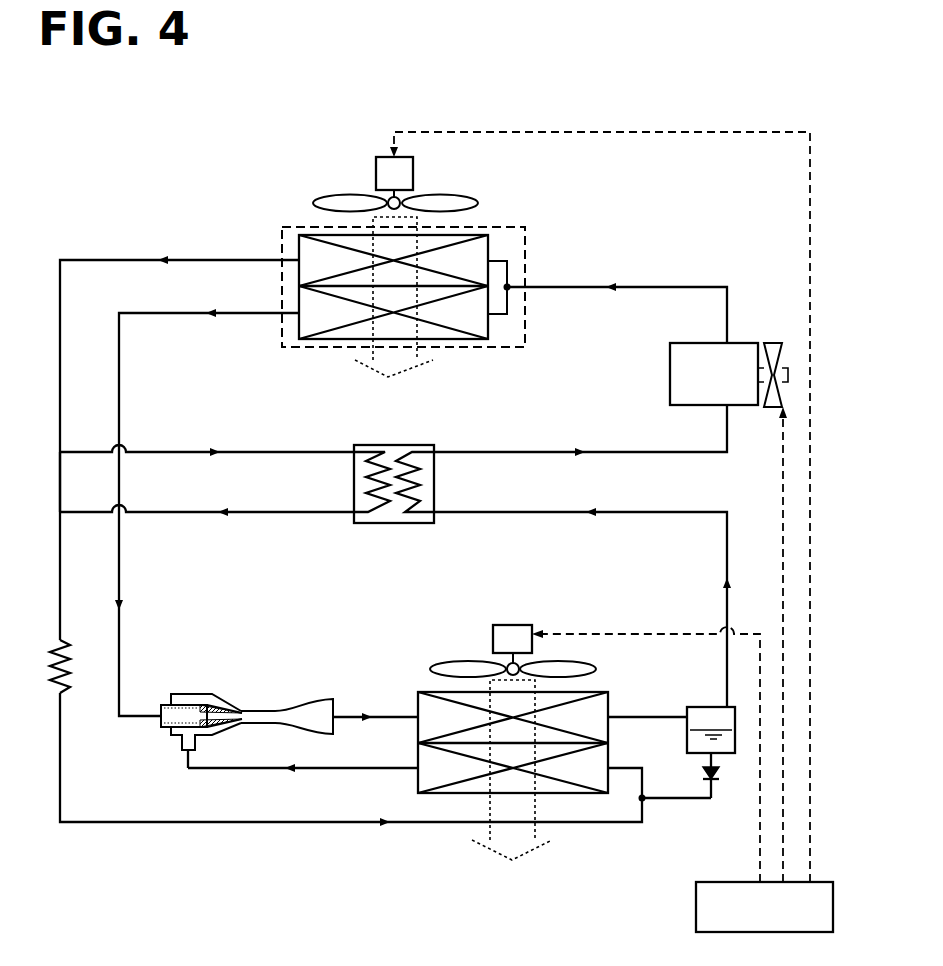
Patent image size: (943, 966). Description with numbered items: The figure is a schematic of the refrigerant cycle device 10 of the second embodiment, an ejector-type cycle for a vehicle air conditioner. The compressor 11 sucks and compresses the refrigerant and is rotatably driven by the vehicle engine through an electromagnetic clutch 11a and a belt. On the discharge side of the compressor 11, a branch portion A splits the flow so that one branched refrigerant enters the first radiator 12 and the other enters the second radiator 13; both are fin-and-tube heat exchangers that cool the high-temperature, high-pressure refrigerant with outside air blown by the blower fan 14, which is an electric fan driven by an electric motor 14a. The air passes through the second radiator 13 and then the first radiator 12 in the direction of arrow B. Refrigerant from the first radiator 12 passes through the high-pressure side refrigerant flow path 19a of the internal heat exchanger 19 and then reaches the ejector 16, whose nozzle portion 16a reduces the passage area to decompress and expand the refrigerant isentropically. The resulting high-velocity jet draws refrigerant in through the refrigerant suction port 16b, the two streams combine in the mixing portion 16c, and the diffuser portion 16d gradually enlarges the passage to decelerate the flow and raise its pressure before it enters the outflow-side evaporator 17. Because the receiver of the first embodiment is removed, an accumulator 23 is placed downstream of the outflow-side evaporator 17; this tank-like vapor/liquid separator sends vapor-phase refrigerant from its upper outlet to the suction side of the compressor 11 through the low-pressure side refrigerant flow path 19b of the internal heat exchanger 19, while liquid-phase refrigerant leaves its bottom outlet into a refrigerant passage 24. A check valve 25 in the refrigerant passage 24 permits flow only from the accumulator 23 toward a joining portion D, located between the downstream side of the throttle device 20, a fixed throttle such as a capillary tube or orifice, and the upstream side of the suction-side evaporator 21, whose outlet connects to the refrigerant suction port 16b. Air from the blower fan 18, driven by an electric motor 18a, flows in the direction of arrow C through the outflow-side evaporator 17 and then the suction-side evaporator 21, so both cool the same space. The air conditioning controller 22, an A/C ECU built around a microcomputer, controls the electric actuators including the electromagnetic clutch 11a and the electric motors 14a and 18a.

The refrigerant cycle device 10 is at (672, 260).
The compressor 11 is at (702, 343).
The electromagnetic clutch 11a is at (770, 343).
The first radiator 12 is at (442, 347).
The second radiator 13 is at (462, 235).
The blower fan 14 is at (340, 197).
The electric motor 14a is at (376, 172).
The ejector 16 is at (218, 700).
The nozzle portion 16a is at (222, 695).
The refrigerant suction port 16b is at (180, 742).
The mixing portion 16c is at (253, 720).
The diffuser portion 16d is at (295, 718).
The outflow-side evaporator 17 is at (418, 700).
The blower fan 18 is at (597, 669).
The electric motor 18a is at (493, 637).
The internal heat exchanger 19 is at (391, 462).
The high-pressure side refrigerant flow path 19a is at (370, 478).
The low-pressure side refrigerant flow path 19b is at (417, 478).
The throttle device 20 is at (58, 642).
The suction-side evaporator 21 is at (418, 783).
The air conditioning controller 22 is at (696, 905).
The accumulator 23 is at (687, 707).
The refrigerant passage 24 is at (667, 797).
The check valve 25 is at (720, 778).
The branch portion A is at (507, 287).
The arrow B is at (388, 377).
The arrow C is at (512, 860).
The joining portion D is at (644, 801).